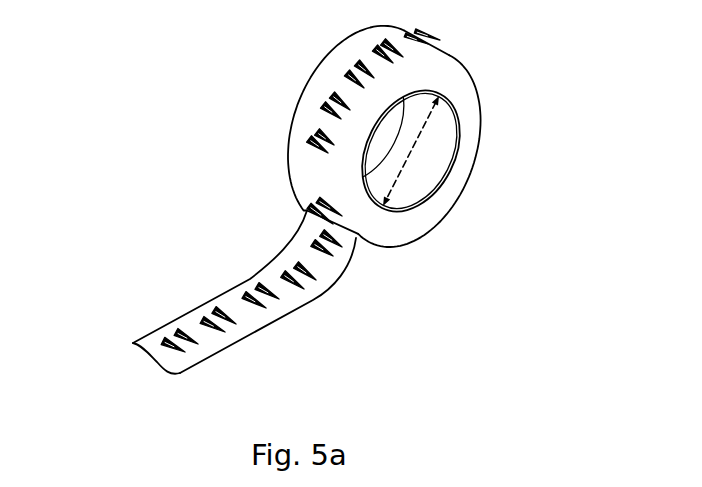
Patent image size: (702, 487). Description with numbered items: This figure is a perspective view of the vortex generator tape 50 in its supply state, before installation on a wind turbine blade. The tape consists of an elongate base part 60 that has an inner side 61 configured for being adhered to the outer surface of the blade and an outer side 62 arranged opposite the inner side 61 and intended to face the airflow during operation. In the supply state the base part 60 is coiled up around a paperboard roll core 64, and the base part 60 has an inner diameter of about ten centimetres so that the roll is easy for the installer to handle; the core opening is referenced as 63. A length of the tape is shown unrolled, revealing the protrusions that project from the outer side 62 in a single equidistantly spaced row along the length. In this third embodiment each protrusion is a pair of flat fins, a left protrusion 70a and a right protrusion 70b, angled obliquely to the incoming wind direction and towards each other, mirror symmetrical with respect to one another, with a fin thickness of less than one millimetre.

The vortex generator tape 50 is at (162, 147).
The elongate base part 60 is at (199, 298).
The inner side 61 is at (313, 300).
The outer side 62 is at (265, 278).
The core opening 63 is at (405, 165).
The paperboard roll core 64 is at (462, 131).
The left protrusion 70a is at (193, 349).
The right protrusion 70b is at (186, 336).